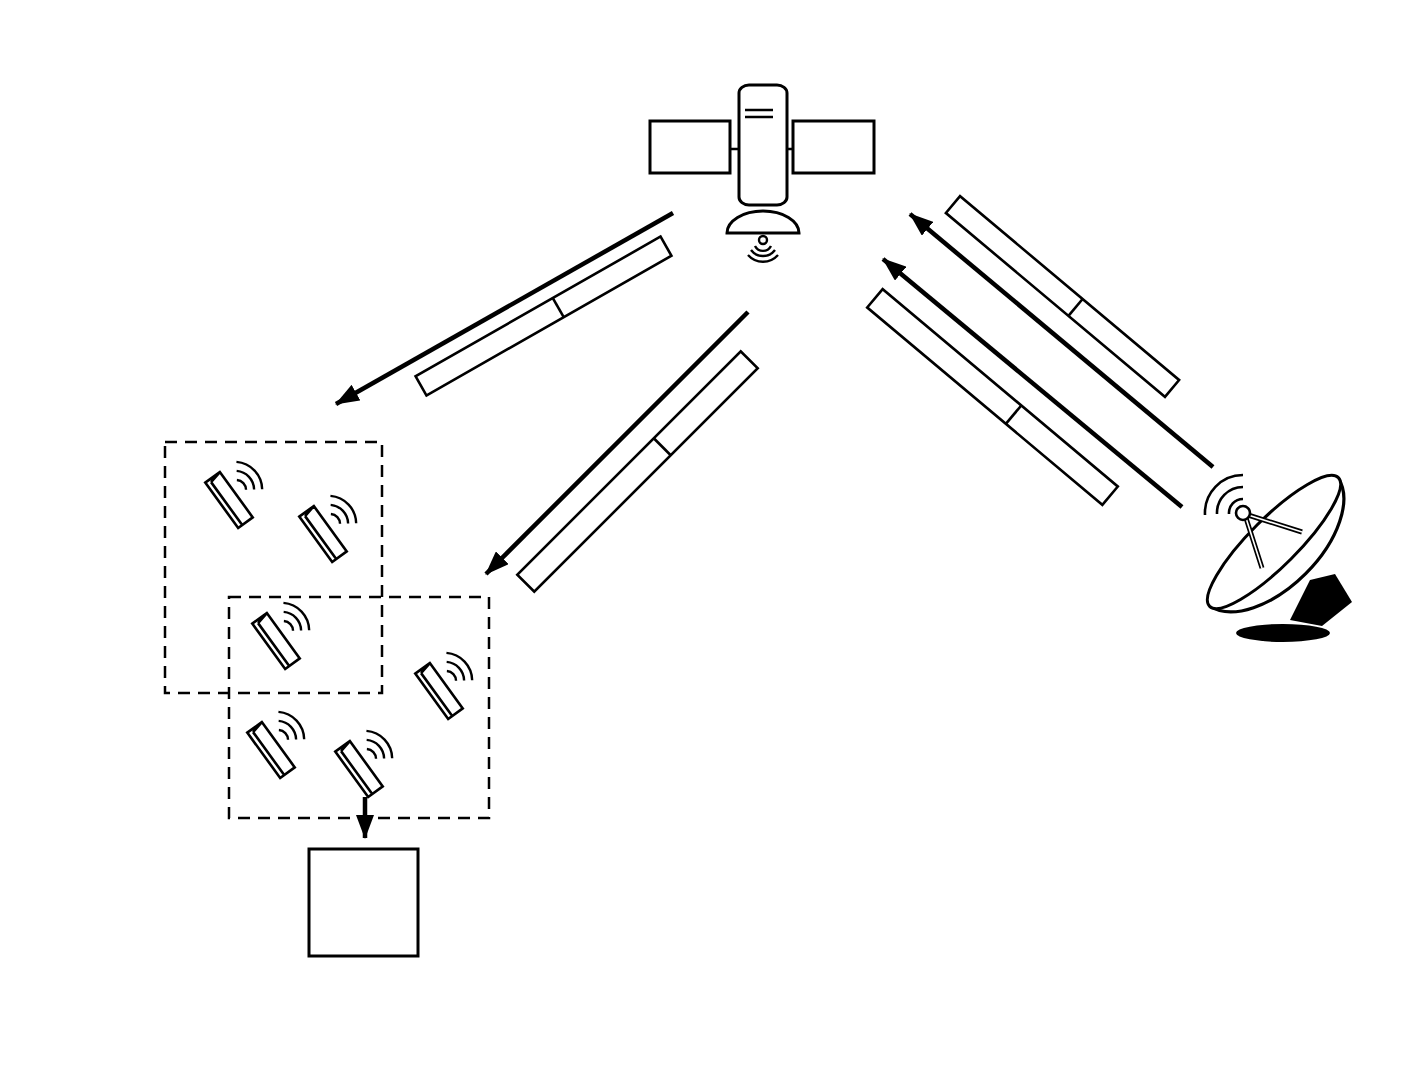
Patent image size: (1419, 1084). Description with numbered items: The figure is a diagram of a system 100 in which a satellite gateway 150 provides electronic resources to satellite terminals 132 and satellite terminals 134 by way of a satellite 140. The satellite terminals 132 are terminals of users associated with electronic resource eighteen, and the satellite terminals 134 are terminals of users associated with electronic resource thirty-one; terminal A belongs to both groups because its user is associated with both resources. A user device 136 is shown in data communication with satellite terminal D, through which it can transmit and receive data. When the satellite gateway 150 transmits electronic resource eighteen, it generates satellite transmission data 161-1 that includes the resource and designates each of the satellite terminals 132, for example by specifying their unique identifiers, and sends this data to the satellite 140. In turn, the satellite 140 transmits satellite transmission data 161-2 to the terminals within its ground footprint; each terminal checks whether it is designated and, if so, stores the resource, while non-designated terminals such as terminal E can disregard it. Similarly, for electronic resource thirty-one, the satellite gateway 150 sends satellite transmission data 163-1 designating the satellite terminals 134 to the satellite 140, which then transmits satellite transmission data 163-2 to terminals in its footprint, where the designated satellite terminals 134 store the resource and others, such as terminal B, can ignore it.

The system 100 is at (233, 84).
The satellite terminals 132 is at (158, 418).
The satellite terminals 134 is at (208, 830).
The user device 136 is at (363, 876).
The satellite 140 is at (822, 118).
The satellite gateway 150 is at (1351, 597).
The satellite transmission data 161-1 is at (1084, 281).
The satellite transmission data 161-2 is at (574, 333).
The satellite transmission data 163-1 is at (982, 432).
The satellite transmission data 163-2 is at (696, 458).